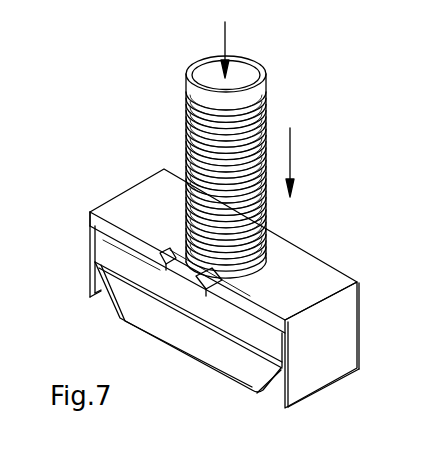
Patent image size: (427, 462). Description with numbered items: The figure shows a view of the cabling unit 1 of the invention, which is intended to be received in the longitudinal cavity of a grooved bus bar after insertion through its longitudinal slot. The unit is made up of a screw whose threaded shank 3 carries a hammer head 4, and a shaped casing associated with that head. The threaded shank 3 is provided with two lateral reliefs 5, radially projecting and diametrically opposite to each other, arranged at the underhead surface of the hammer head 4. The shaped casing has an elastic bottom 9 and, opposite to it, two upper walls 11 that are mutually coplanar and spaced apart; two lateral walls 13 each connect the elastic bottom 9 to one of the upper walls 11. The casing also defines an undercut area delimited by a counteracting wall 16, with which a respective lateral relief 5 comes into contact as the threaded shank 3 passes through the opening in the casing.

The cabling unit 1 is at (70, 306).
The threaded shank 3 is at (255, 107).
The hammer head 4 is at (197, 318).
The lateral reliefs 5 is at (235, 260).
The elastic bottom 9 is at (241, 394).
The upper walls 11 is at (103, 223).
The lateral walls 13 is at (333, 330).
The counteracting wall 16 is at (160, 262).